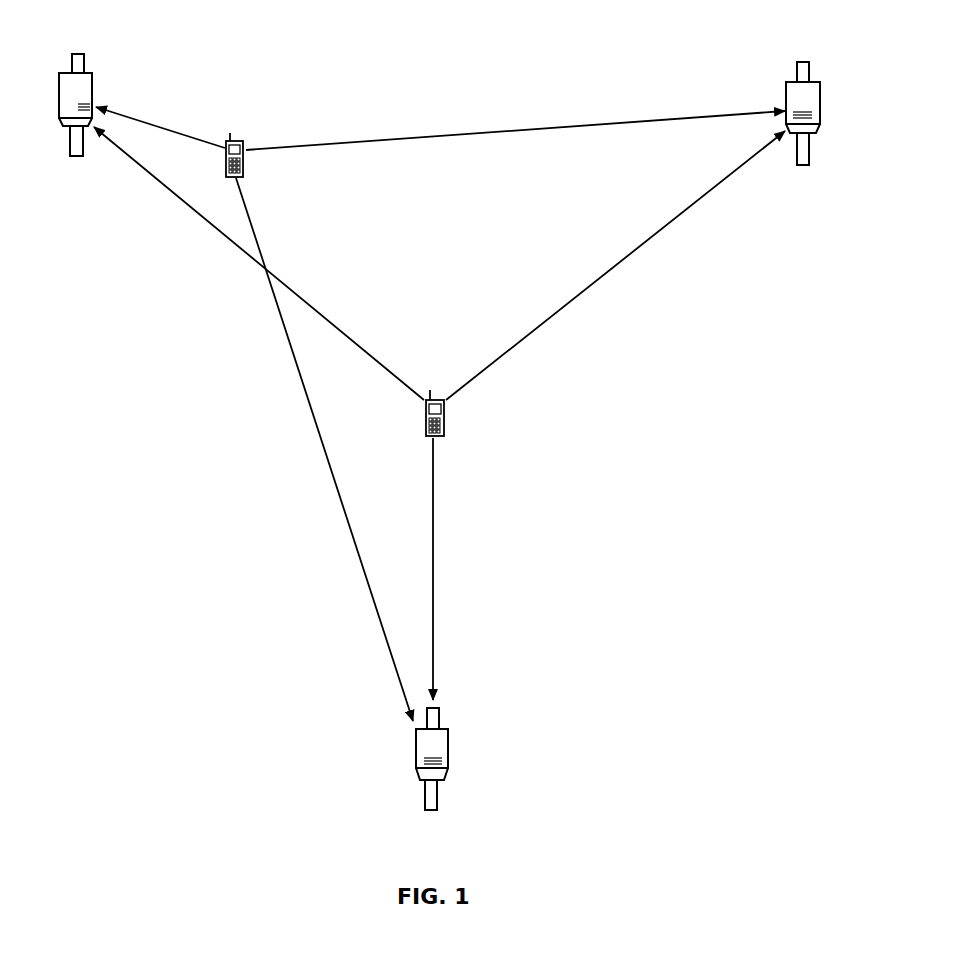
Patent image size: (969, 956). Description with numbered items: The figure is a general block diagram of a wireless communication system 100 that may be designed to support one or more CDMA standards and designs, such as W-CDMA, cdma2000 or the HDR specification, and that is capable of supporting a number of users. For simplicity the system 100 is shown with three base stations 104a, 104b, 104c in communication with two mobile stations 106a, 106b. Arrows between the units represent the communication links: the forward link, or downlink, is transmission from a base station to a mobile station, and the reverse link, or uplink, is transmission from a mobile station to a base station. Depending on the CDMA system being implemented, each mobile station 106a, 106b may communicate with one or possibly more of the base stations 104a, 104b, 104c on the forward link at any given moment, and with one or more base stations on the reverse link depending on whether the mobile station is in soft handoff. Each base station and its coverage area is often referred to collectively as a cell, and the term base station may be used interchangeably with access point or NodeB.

The wireless communication system 100 is at (928, 78).
The base station 104a is at (86, 73).
The base station 104b is at (811, 82).
The base station 104c is at (442, 729).
The mobile station 106a is at (239, 141).
The mobile station 106b is at (430, 437).